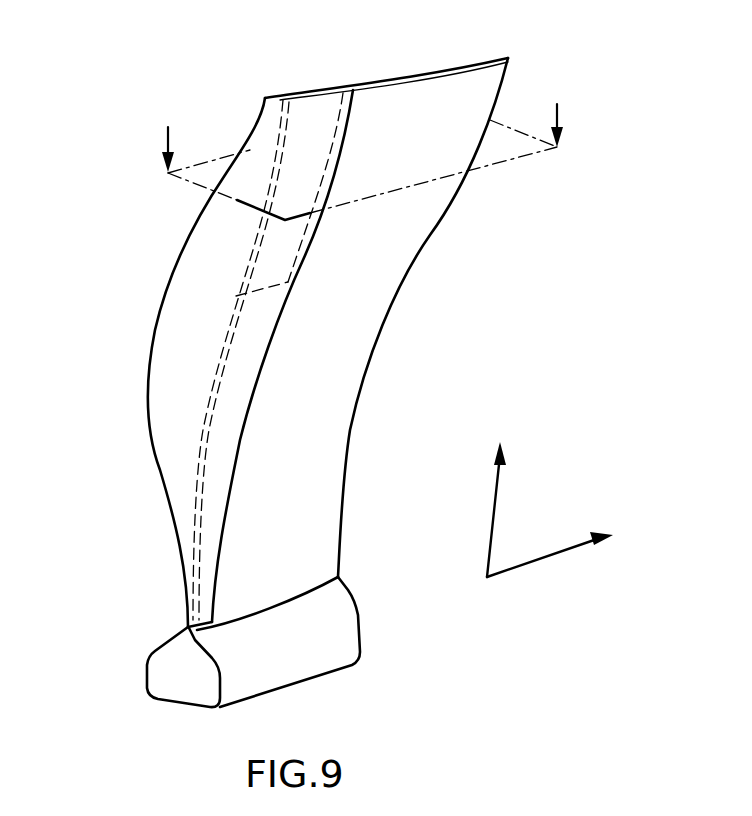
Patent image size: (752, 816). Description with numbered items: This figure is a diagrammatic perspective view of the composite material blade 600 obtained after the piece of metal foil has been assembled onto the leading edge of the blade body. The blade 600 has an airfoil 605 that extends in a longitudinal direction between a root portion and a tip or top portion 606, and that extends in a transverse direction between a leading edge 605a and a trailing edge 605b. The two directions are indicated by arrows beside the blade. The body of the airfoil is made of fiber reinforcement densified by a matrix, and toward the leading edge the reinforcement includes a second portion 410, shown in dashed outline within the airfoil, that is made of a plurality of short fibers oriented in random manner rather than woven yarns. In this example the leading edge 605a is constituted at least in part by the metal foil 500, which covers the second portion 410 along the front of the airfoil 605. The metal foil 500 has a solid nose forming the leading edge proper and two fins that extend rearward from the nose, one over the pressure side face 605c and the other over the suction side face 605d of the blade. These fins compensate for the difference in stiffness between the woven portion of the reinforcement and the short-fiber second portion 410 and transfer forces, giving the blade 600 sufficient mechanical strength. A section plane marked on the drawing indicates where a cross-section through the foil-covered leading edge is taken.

The composite material blade 600 is at (238, 80).
The tip or top portion 606 is at (379, 80).
The second portion 410 is at (303, 162).
The metal foil 500 is at (187, 320).
The airfoil 605 is at (342, 322).
The leading edge 605a is at (150, 450).
The trailing edge 605b is at (412, 265).
The pressure side face 605c is at (374, 383).
The suction side face 605d is at (327, 447).